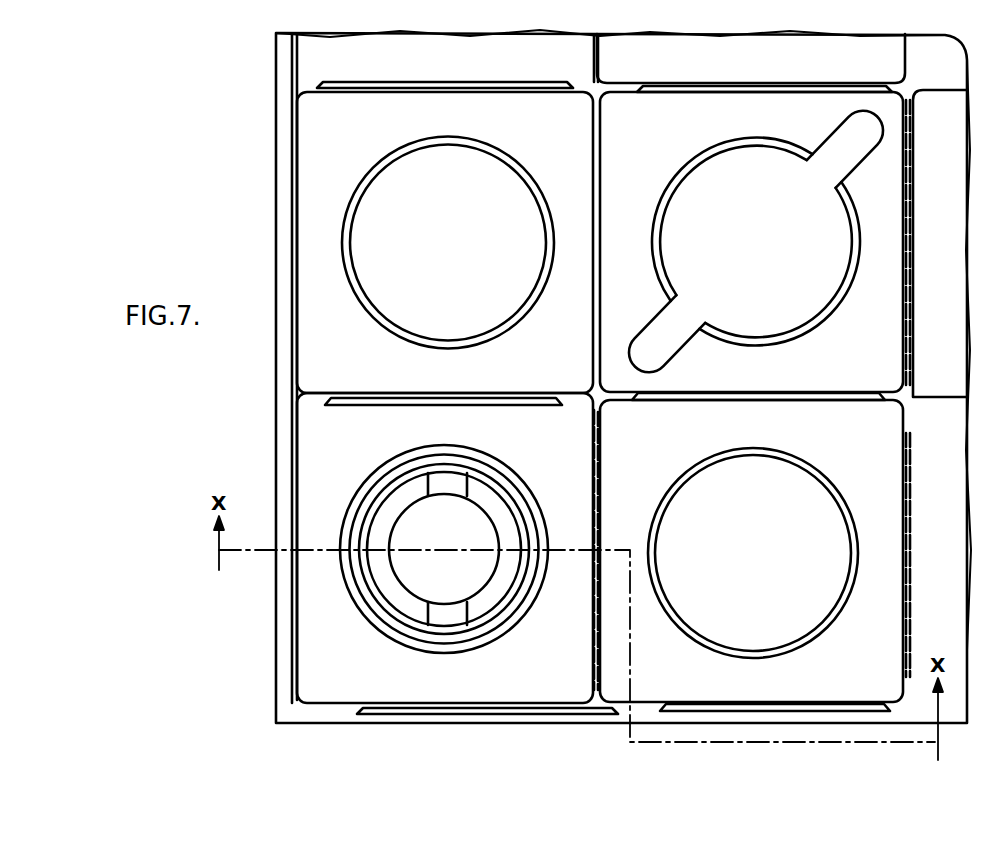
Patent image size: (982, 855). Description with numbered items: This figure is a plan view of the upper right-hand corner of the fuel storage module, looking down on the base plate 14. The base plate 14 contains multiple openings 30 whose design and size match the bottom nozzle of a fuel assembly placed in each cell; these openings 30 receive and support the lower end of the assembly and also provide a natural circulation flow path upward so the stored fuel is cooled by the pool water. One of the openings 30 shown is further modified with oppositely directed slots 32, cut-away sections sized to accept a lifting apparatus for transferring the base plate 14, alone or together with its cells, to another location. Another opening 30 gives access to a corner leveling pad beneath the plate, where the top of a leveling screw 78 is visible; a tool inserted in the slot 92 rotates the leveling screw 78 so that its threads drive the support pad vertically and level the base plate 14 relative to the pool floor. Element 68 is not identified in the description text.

The base plate 14 is at (771, 128).
The openings 30 is at (383, 170).
The slots 32 is at (669, 353).
The outer ring flange 68 is at (366, 196).
The leveling screw 78 is at (393, 492).
The slot 92 is at (430, 612).